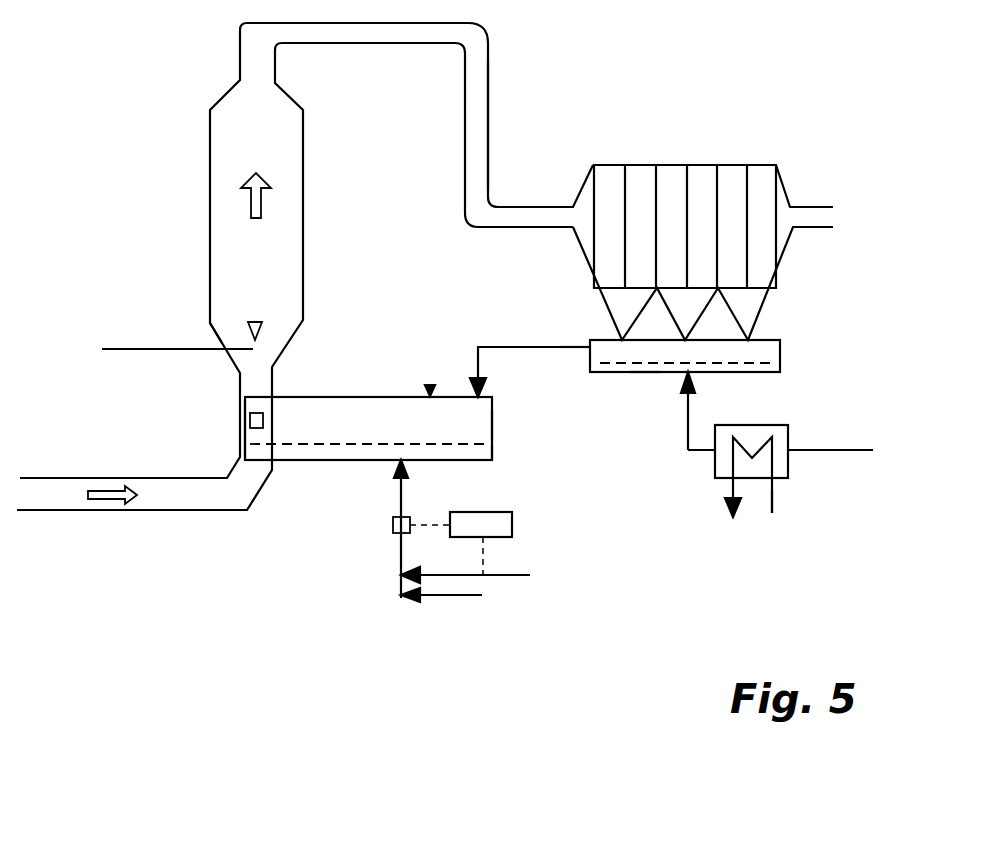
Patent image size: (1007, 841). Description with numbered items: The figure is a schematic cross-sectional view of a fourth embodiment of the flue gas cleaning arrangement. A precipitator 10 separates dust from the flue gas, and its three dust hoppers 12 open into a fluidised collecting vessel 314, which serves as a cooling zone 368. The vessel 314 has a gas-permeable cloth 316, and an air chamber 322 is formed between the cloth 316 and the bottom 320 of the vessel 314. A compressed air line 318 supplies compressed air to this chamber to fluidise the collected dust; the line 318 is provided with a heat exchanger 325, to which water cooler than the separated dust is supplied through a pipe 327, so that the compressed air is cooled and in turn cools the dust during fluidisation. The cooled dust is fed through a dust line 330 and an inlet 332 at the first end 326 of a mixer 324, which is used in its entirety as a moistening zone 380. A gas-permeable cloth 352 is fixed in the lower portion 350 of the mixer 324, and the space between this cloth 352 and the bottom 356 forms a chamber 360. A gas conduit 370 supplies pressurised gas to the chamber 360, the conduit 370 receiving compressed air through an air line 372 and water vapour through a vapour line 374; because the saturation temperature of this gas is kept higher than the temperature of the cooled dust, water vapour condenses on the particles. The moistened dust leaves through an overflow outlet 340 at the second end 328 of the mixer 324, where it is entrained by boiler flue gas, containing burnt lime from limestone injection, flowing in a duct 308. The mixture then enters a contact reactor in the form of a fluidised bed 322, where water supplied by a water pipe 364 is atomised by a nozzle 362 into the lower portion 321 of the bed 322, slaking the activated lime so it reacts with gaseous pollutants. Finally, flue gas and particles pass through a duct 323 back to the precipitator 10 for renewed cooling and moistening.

The precipitator 10 is at (707, 190).
The dust hoppers 12 is at (623, 308).
The duct 308 is at (55, 512).
The collecting vessel 314 is at (797, 348).
The gas-permeable cloth 316 is at (733, 365).
The compressed air line 318 is at (845, 450).
The bottom 320 is at (645, 373).
The lower portion 321 is at (217, 330).
The fluidised bed 322 is at (230, 153).
The duct 323 is at (490, 78).
The mixer 324 is at (430, 385).
The heat exchanger 325 is at (712, 460).
The first end 326 is at (492, 425).
The pipe 327 is at (773, 493).
The second end 328 is at (245, 412).
The dust line 330 is at (528, 345).
The inlet 332 is at (470, 387).
The outlet 340 is at (248, 432).
The lower portion 350 is at (492, 455).
The gas-permeable cloth 352 is at (368, 440).
The bottom 356 is at (363, 462).
The chamber 360 is at (317, 460).
The nozzle 362 is at (255, 322).
The water pipe 364 is at (163, 347).
The cooling zone 368 is at (623, 352).
The gas conduit 370 is at (395, 493).
The air line 372 is at (453, 597).
The vapour line 374 is at (510, 577).
The moistening zone 380 is at (320, 423).